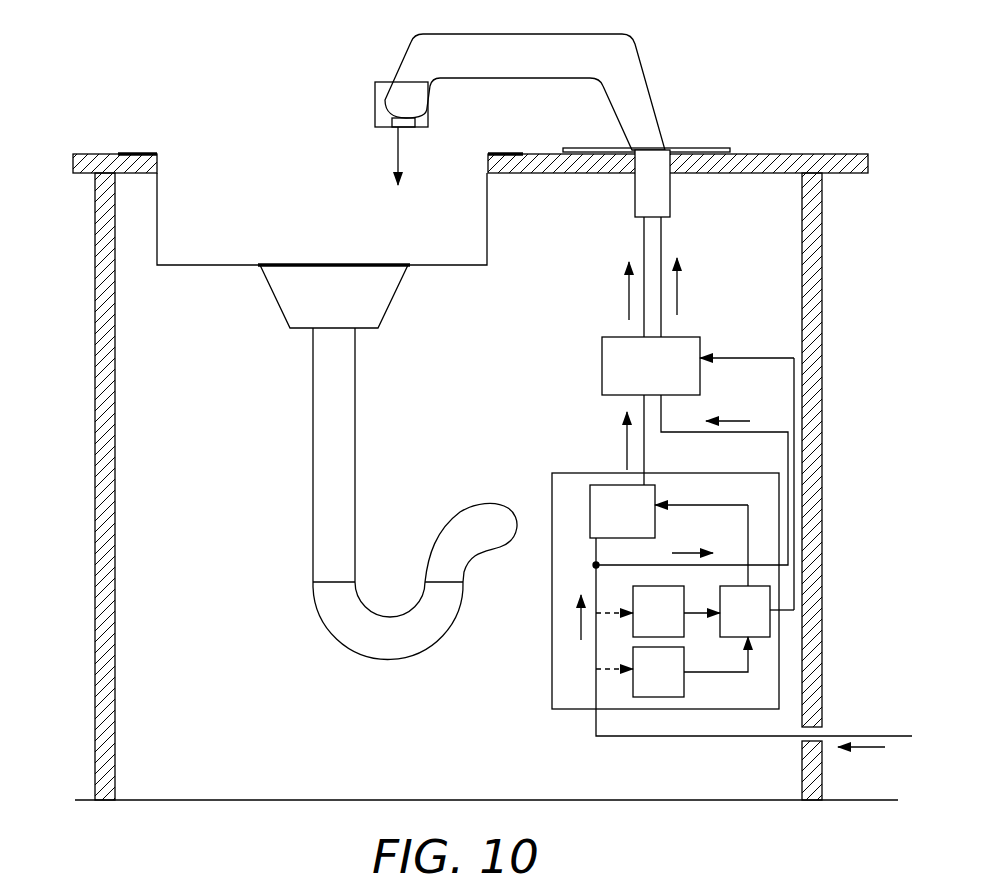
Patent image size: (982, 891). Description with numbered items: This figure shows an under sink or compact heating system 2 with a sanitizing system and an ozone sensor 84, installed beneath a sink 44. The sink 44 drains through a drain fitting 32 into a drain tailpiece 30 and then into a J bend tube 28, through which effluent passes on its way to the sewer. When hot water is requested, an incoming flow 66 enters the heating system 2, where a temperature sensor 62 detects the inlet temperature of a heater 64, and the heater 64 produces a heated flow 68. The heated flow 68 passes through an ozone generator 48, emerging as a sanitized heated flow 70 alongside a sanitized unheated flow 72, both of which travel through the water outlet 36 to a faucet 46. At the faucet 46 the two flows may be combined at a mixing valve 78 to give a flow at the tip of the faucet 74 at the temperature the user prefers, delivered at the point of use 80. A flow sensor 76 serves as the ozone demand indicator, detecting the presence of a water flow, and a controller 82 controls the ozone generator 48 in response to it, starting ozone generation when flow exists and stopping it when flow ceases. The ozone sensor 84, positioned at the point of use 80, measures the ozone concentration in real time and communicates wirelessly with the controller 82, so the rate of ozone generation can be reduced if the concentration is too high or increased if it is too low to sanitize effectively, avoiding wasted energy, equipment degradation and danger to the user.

The heating system 2 is at (565, 515).
The J bend tube 28 is at (411, 607).
The drain tailpiece 30 is at (355, 338).
The drain fitting 32 is at (270, 297).
The water outlet 36 is at (641, 234).
The sink 44 is at (488, 220).
The faucet 46 is at (647, 70).
The ozone generator 48 is at (602, 365).
The temperature sensor 62 is at (643, 684).
The heater 64 is at (607, 525).
The incoming flow 66 is at (875, 750).
The heated flow 68 is at (627, 440).
The sanitized heated flow 70 is at (629, 300).
The sanitized unheated flow 72 is at (678, 295).
The flow at tip of faucet 74 is at (402, 155).
The flow sensor 76 is at (643, 624).
The mixing valve 78 is at (670, 187).
The point of use 80 is at (378, 133).
The controller 82 is at (730, 624).
The ozone sensor 84 is at (375, 97).